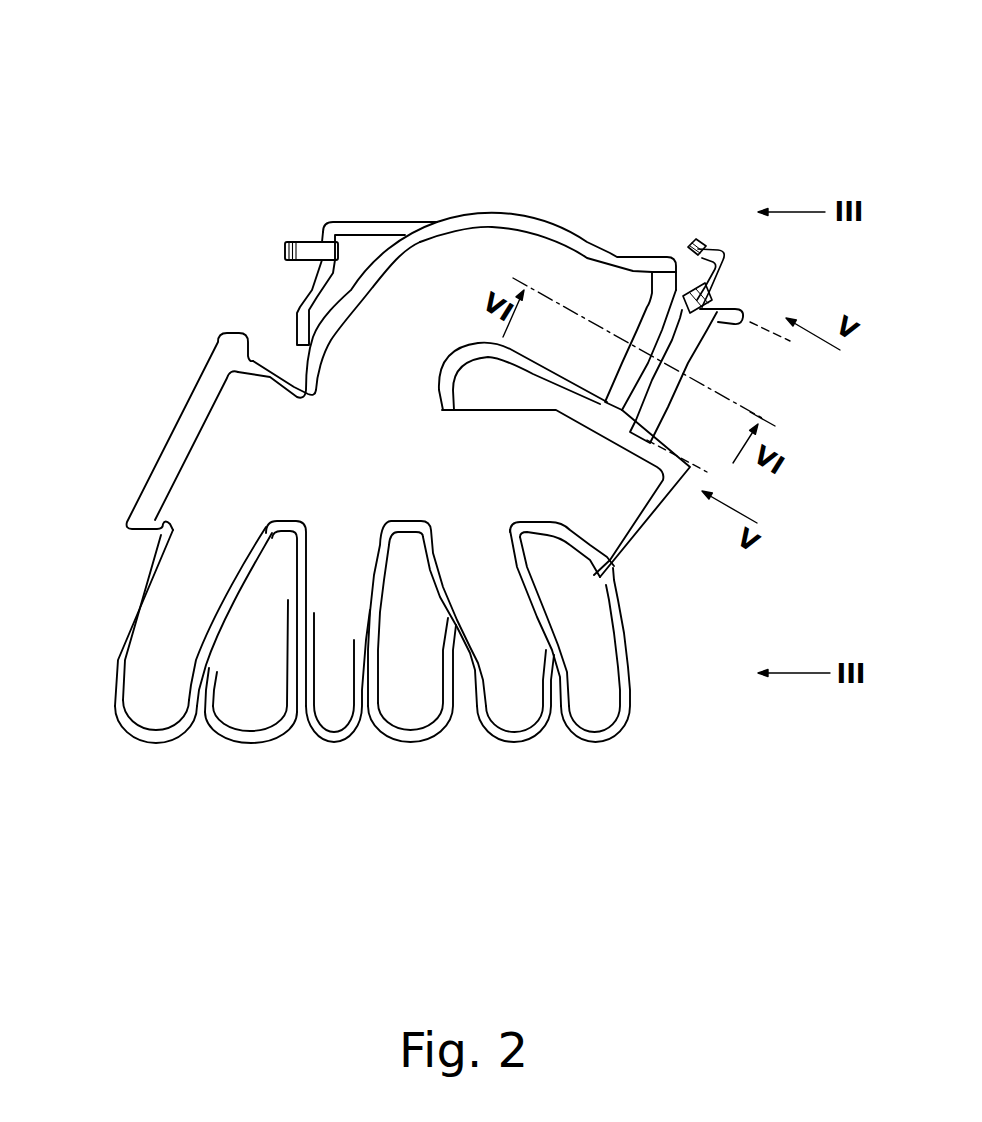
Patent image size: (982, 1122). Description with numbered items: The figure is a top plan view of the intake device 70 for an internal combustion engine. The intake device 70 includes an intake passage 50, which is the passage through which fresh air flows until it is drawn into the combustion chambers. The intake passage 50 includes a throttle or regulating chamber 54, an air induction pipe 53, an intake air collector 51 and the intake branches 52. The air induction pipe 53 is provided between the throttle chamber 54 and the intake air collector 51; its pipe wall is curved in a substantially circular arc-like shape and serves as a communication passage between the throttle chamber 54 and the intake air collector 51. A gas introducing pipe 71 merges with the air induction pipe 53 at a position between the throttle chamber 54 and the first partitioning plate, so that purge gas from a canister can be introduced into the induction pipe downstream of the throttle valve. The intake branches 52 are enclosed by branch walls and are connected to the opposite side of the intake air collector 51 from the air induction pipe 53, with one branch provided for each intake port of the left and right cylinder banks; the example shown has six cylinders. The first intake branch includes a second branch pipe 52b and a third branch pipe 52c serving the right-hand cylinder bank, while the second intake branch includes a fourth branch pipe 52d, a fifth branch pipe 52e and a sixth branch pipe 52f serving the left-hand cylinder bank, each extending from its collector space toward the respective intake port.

The intake passage 50 is at (512, 163).
The intake air collector 51 is at (214, 437).
The intake branches 52 is at (365, 712).
The second branch pipe 52b is at (337, 708).
The third branch pipe 52c is at (517, 695).
The fourth branch pipe 52d is at (150, 655).
The fifth branch pipe 52e is at (412, 703).
The sixth branch pipe 52f is at (597, 685).
The air induction pipe 53 is at (487, 238).
The throttle chamber 54 is at (750, 324).
The intake device 70 is at (418, 118).
The gas introducing pipe 71 is at (710, 257).